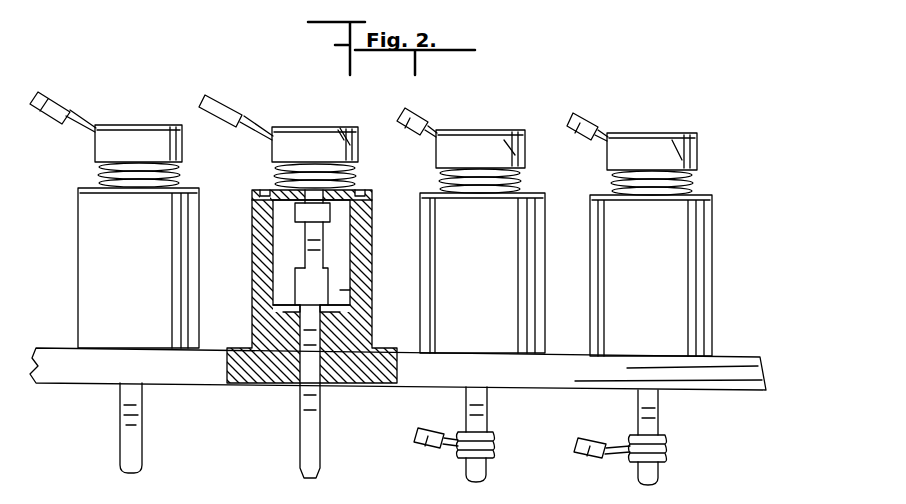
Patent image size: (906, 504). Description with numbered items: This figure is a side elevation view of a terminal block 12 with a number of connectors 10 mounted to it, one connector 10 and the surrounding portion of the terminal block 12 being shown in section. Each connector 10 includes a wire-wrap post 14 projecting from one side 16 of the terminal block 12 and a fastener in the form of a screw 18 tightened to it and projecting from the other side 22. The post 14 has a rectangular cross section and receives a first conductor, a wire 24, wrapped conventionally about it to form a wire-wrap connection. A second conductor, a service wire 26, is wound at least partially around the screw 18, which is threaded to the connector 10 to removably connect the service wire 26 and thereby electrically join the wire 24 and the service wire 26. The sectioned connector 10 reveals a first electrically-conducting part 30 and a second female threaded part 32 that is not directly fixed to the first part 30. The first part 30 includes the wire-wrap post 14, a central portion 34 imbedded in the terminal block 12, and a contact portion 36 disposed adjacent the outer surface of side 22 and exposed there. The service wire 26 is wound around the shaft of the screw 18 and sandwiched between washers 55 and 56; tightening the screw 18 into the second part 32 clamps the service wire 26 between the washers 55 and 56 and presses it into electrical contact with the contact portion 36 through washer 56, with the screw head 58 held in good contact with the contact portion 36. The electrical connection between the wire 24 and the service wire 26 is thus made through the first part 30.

The connector 10 is at (327, 125).
The terminal block 12 is at (716, 368).
The wire-wrap post 14 is at (318, 422).
The one side of terminal block 16 is at (720, 392).
The screw 18 is at (338, 140).
The other side of terminal block 22 is at (748, 357).
The wire 24 is at (437, 448).
The service wire 26 is at (273, 178).
The first electrically-conducting part 30 is at (298, 245).
The second female threaded part 32 is at (355, 265).
The central portion 34 is at (305, 282).
The contact portion 36 is at (343, 200).
The washer 55 is at (275, 168).
The washer 56 is at (348, 190).
The screw head 58 is at (290, 135).